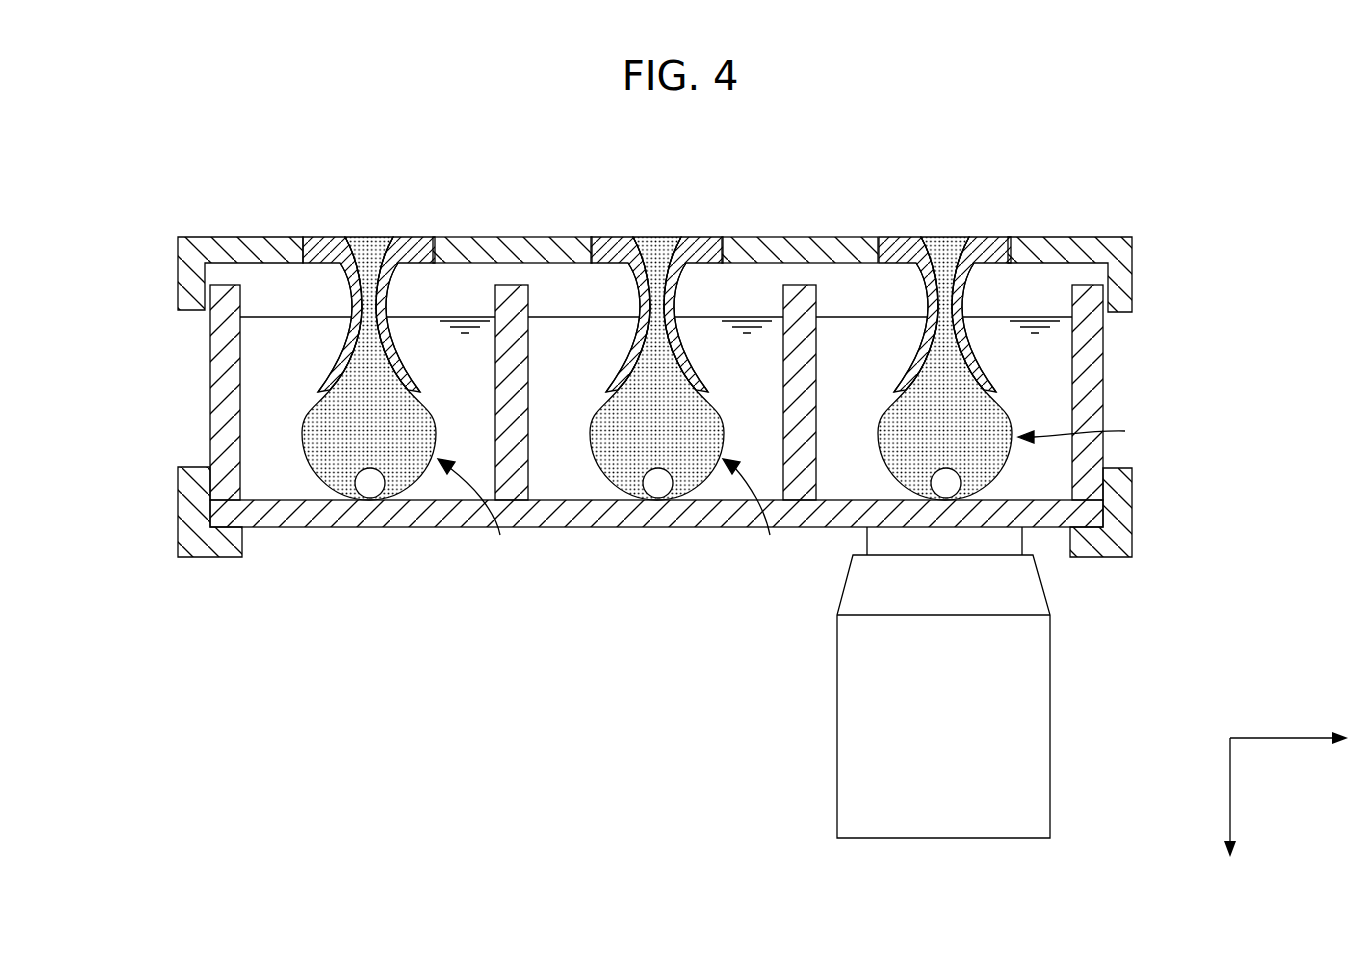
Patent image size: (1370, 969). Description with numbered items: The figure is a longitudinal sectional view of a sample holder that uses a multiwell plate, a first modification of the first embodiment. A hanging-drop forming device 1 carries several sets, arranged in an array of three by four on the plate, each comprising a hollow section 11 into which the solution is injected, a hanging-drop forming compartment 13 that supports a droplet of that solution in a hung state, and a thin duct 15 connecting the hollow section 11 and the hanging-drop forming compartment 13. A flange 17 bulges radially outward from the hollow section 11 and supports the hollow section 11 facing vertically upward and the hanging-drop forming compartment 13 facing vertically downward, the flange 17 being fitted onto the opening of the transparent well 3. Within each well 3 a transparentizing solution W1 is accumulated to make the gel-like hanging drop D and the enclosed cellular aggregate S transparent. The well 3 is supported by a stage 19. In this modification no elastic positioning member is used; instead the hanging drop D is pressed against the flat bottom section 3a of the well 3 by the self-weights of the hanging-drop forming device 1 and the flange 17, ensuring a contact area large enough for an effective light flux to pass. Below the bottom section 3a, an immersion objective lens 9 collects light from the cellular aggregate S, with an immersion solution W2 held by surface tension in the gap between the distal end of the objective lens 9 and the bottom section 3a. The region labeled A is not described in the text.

The hanging-drop forming device 1 is at (152, 176).
The well 3 is at (206, 392).
The bottom section 3a is at (290, 514).
The objective lens 9 is at (838, 690).
The hollow section 11 is at (314, 252).
The hanging-drop forming compartment 13 is at (336, 374).
The duct 15 is at (351, 332).
The flange 17 is at (521, 236).
The stage 19 is at (1136, 506).
The liquid column / droplet region A is at (320, 445).
The hanging drop D is at (794, 490).
The cellular aggregate S is at (370, 488).
The transparentizing solution W1 is at (440, 490).
The immersion solution W2 is at (870, 544).